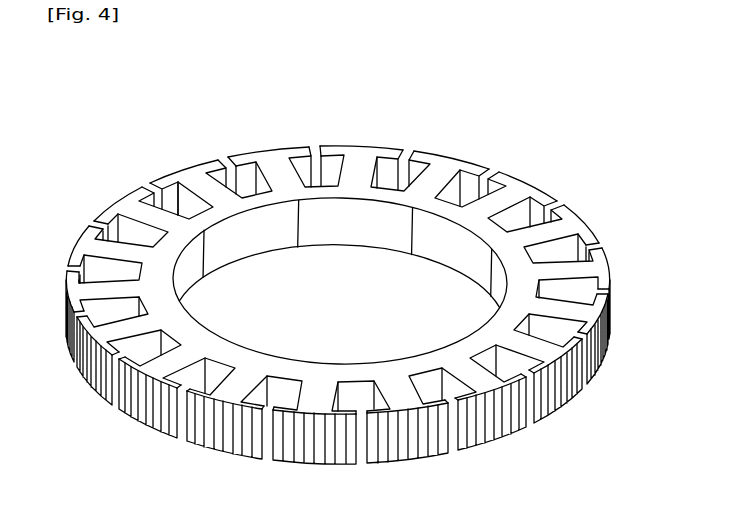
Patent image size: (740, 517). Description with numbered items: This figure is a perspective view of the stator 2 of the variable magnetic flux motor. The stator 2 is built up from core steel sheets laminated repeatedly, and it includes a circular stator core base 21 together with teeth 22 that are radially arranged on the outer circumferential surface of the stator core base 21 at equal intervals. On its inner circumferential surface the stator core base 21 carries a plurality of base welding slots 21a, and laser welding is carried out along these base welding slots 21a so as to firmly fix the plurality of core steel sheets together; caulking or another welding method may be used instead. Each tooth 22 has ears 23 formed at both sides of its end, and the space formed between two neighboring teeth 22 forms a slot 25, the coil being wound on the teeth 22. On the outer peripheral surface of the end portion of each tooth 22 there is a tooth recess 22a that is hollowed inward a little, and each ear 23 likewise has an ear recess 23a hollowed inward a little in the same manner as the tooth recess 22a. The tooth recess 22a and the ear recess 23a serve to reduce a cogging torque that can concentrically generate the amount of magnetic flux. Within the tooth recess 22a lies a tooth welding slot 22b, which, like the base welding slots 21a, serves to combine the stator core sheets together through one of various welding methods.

The stator 2 is at (186, 112).
The stator core base 21 is at (396, 193).
The base welding slot 21a is at (297, 227).
The tooth 22 is at (423, 177).
The tooth recess 22a is at (283, 140).
The tooth welding slot 22b is at (270, 148).
The ear 23 is at (417, 150).
The ear recess 23a is at (301, 145).
The slot 25 is at (170, 187).